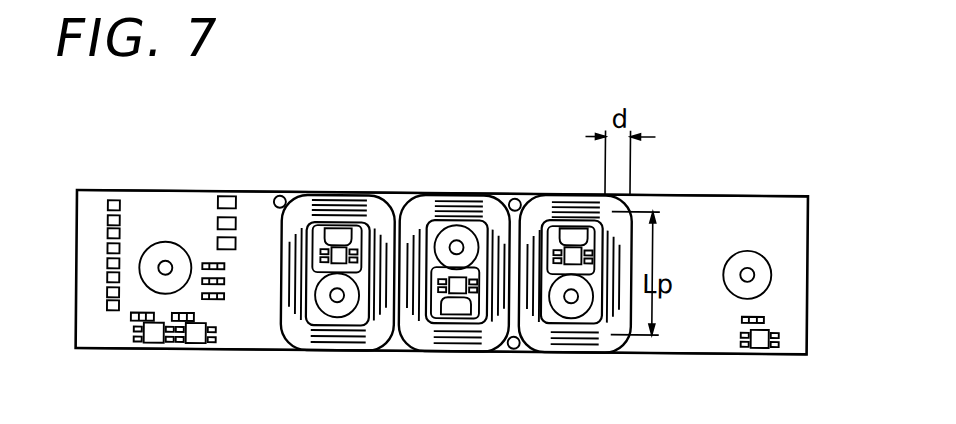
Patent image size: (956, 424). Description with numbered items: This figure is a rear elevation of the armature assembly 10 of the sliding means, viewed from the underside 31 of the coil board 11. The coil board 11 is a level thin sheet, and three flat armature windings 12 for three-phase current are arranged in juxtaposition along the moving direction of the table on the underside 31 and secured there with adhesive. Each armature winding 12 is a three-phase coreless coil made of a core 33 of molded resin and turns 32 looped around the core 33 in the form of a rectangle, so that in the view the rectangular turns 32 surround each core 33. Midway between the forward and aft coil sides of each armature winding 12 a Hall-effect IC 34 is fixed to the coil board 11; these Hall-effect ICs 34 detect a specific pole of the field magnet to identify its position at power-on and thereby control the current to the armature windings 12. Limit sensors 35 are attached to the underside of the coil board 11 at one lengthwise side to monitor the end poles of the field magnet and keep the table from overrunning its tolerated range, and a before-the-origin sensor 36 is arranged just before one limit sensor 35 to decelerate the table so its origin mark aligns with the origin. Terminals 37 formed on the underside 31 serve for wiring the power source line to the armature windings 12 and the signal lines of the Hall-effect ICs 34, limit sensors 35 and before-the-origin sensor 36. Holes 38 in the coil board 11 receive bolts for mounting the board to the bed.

The armature assembly 10 is at (673, 166).
The coil board 11 is at (702, 241).
The armature winding 12 is at (330, 203).
The underside of the coil board 31 is at (698, 323).
The turns 32 is at (293, 258).
The core 33 is at (320, 316).
The Hall-effect IC 34 is at (352, 238).
The limit sensor 35 is at (154, 338).
The before-the-origin sensor 36 is at (198, 340).
The terminals 37 is at (108, 263).
The holes 38 is at (166, 260).